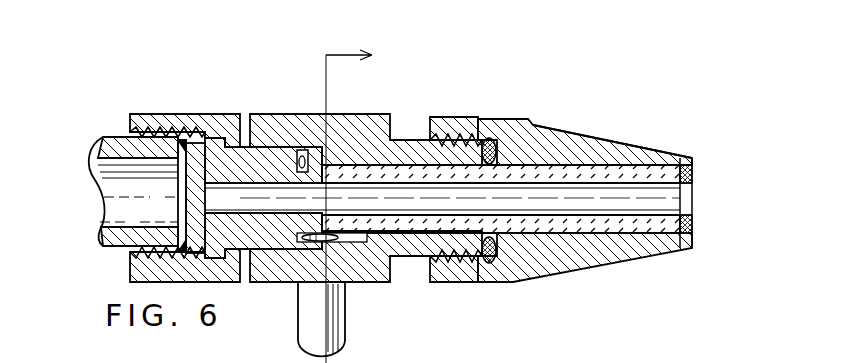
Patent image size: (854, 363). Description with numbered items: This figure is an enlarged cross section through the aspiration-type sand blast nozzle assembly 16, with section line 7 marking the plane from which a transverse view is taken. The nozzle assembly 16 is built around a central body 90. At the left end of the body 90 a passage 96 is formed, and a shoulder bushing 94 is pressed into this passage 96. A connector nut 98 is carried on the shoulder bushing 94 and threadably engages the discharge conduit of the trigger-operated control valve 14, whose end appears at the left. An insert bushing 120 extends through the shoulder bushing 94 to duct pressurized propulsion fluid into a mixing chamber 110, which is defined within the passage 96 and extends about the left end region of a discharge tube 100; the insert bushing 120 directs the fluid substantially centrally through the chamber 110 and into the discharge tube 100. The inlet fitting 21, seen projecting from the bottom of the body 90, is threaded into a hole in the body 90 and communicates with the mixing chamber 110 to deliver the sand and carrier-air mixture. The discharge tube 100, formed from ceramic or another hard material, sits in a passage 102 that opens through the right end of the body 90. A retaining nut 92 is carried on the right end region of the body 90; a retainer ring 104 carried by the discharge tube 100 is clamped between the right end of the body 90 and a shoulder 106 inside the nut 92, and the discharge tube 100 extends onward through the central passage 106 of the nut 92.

The control valve 14 is at (112, 130).
The insert bushing 120 is at (132, 254).
The connector nut 98 is at (152, 113).
The shoulder bushing 94 is at (258, 130).
The passage 96 is at (306, 150).
The central body 90 is at (345, 116).
The mixing chamber 110 is at (273, 262).
The inlet fitting 21 is at (332, 314).
The section line 7- 7 is at (359, 204).
The sand blast nozzle assembly 16 is at (462, 88).
The passage 102 is at (436, 175).
The retaining nut 92 is at (603, 141).
The discharge tube 100 is at (628, 147).
The shoulder / passage 106 is at (470, 142).
The retainer ring 104 is at (492, 264).